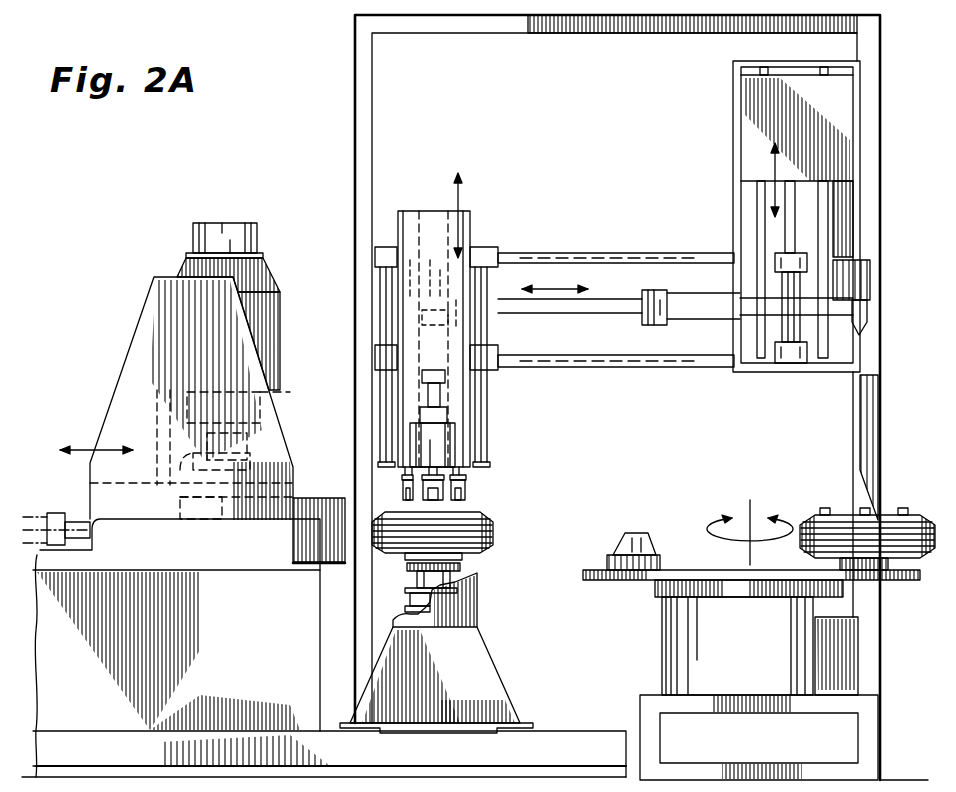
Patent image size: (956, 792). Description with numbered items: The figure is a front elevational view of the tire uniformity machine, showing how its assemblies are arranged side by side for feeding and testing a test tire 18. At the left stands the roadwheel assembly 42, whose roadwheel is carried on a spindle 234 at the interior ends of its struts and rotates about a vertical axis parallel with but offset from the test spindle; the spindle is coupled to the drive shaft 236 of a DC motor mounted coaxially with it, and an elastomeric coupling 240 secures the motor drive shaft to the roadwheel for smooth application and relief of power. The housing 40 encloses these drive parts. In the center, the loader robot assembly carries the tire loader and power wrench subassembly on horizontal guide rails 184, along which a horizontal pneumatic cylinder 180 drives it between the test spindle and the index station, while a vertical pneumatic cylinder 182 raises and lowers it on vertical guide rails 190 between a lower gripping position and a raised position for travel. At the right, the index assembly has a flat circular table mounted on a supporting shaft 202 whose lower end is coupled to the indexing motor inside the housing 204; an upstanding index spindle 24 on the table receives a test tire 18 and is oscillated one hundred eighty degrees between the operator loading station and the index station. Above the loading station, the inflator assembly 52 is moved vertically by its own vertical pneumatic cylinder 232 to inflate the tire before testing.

The test tire 18 is at (494, 523).
The index spindle 24 is at (647, 536).
The wheel head housing 40 is at (188, 440).
The roadwheel assembly 42 is at (90, 475).
The inflator assembly 52 is at (858, 82).
The horizontal pneumatic cylinder 180 is at (708, 277).
The vertical pneumatic cylinder 182 is at (412, 220).
The horizontal guide rails 184 is at (575, 229).
The vertical guide rails 190 is at (380, 403).
The supporting shaft 202 is at (745, 590).
The housing 204 is at (663, 668).
The vertical pneumatic cylinder 232 is at (778, 335).
The spindle 234 is at (236, 525).
The drive shaft 236 is at (253, 428).
The elastomeric coupling 240 is at (180, 527).